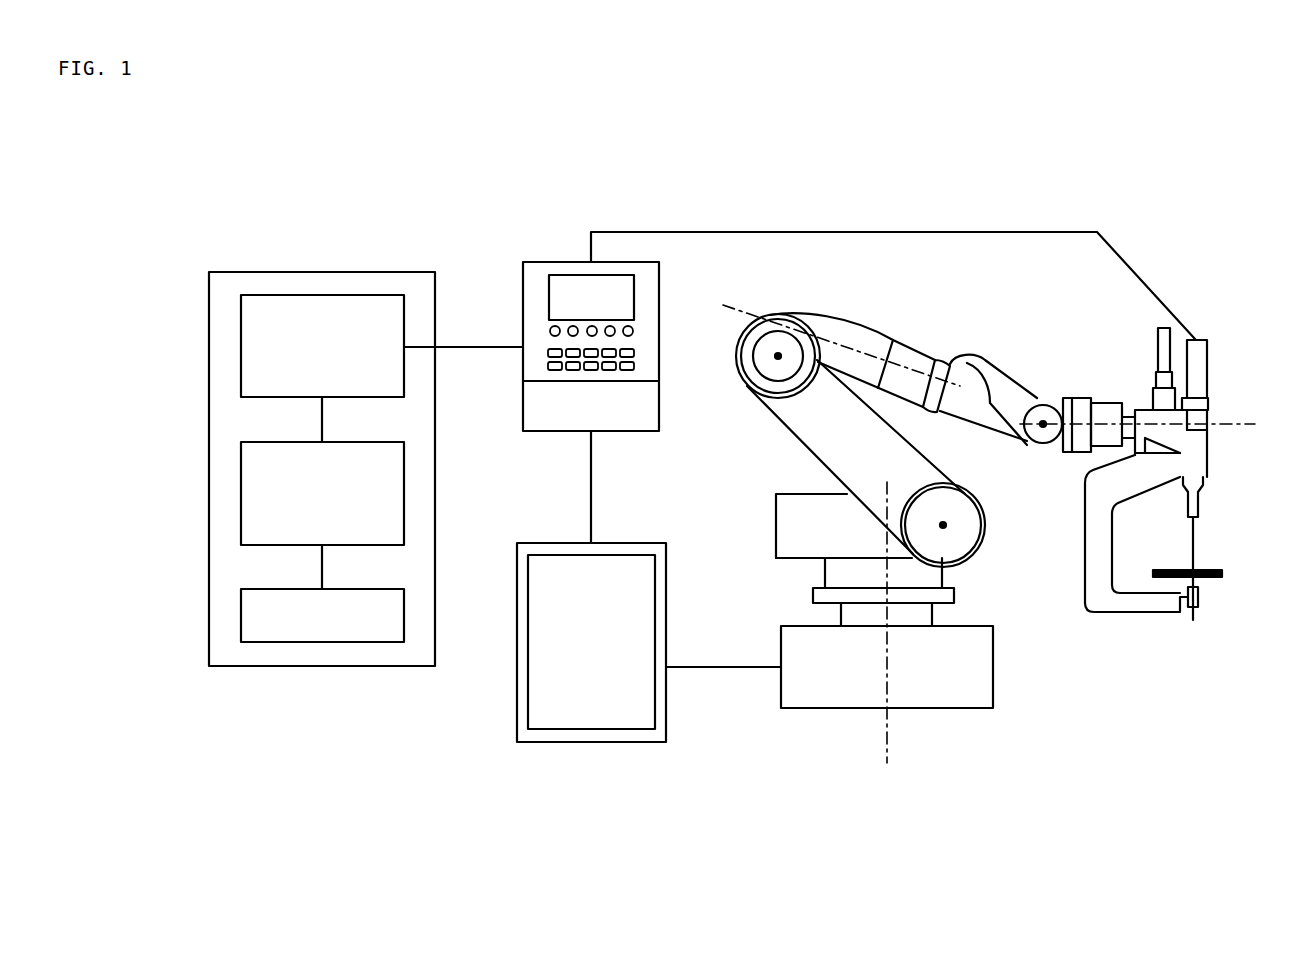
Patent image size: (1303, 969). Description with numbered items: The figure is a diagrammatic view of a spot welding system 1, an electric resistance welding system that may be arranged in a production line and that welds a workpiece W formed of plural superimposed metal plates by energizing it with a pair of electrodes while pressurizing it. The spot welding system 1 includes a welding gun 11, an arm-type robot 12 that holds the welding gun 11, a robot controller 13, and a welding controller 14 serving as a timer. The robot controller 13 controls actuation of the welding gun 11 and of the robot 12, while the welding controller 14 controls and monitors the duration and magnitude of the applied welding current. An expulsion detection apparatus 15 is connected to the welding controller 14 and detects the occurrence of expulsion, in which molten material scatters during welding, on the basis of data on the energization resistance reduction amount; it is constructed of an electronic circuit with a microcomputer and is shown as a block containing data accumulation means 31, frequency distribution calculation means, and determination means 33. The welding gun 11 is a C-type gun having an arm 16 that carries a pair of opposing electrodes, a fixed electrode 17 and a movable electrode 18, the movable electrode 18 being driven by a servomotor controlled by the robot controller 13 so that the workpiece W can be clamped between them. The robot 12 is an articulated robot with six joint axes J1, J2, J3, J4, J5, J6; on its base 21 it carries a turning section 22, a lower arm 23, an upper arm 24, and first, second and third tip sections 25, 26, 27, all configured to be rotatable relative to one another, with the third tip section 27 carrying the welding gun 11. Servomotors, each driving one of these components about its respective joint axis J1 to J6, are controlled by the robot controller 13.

The spot welding system 1 is at (1008, 185).
The welding gun 11 is at (1135, 630).
The arm-type robot 12 is at (762, 404).
The robot controller 13 is at (545, 543).
The welding controller 14 is at (553, 260).
The expulsion detection apparatus 15 is at (252, 270).
The arm 16 is at (1204, 590).
The fixed electrode 17 is at (1197, 527).
The movable electrode 18 is at (1208, 368).
The base 21 is at (986, 648).
The turning section 22 is at (954, 594).
The lower arm 23 is at (810, 430).
The upper arm 24 is at (915, 345).
The first tip section 25 is at (972, 410).
The second tip section 26 is at (1073, 397).
The third tip section 27 is at (1093, 400).
The data accumulation means 31 is at (241, 347).
The determination means 33 is at (241, 613).
The first joint axis J1 is at (887, 742).
The second joint axis J2 is at (943, 525).
The third joint axis J3 is at (778, 356).
The fourth joint axis J4 is at (733, 302).
The fifth joint axis J5 is at (1043, 424).
The sixth joint axis J6 is at (1151, 427).
The workpiece W is at (1222, 566).